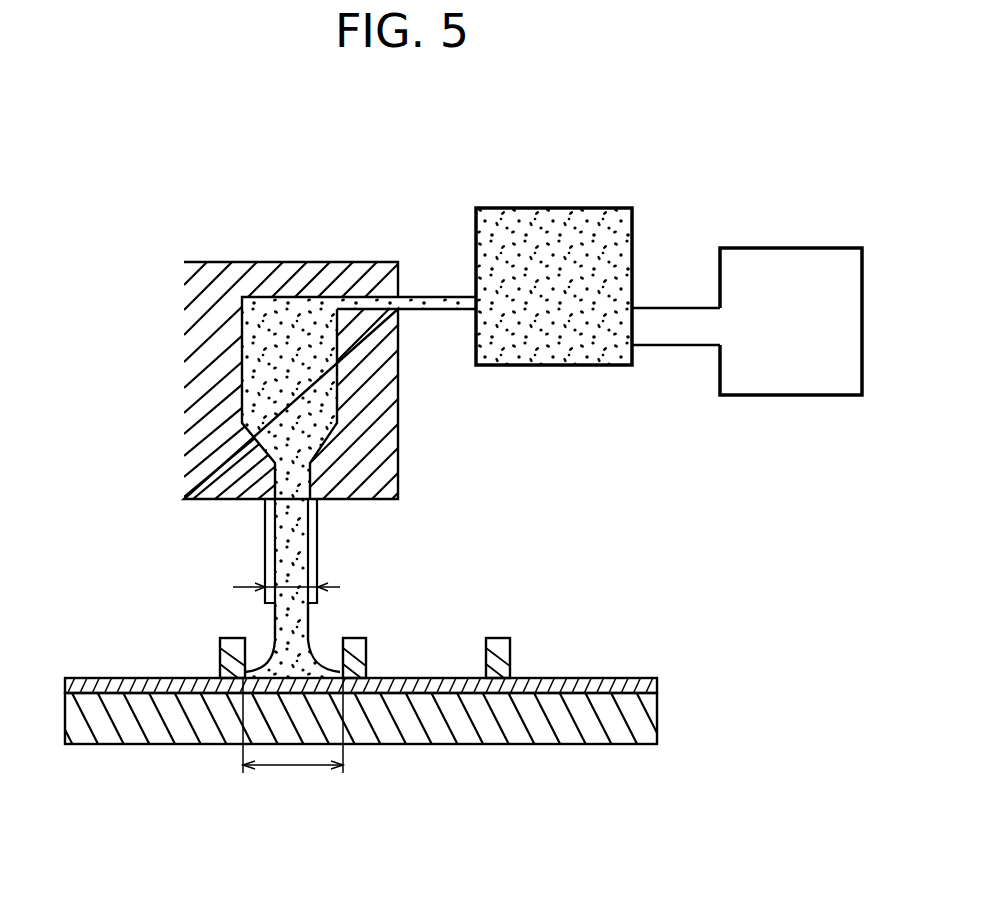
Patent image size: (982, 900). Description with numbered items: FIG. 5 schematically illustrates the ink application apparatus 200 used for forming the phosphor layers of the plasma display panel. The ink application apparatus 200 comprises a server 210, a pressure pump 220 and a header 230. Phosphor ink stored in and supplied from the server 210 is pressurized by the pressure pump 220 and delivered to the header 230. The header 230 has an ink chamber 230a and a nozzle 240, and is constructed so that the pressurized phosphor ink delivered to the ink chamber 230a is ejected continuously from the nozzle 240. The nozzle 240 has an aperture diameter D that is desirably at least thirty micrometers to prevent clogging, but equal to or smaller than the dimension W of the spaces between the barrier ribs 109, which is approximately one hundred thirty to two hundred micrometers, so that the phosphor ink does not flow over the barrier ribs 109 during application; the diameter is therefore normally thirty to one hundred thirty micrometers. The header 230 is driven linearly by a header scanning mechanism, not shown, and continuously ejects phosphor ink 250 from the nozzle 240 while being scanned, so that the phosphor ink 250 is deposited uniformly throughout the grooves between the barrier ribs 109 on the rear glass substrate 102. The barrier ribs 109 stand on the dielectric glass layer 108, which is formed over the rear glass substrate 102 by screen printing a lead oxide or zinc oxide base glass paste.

The ink application apparatus 200 is at (400, 237).
The server 210 is at (793, 398).
The pressure pump 220 is at (563, 368).
The header 230 is at (398, 472).
The ink chamber 230a is at (255, 370).
The nozzle 240 is at (265, 557).
The phosphor ink 250 is at (310, 645).
The barrier ribs 109 is at (220, 648).
The dielectric glass layer 108 is at (657, 686).
The rear glass substrate 102 is at (655, 715).
The aperture diameter D is at (328, 583).
The dimension of the spaces between barrier ribs W is at (293, 738).